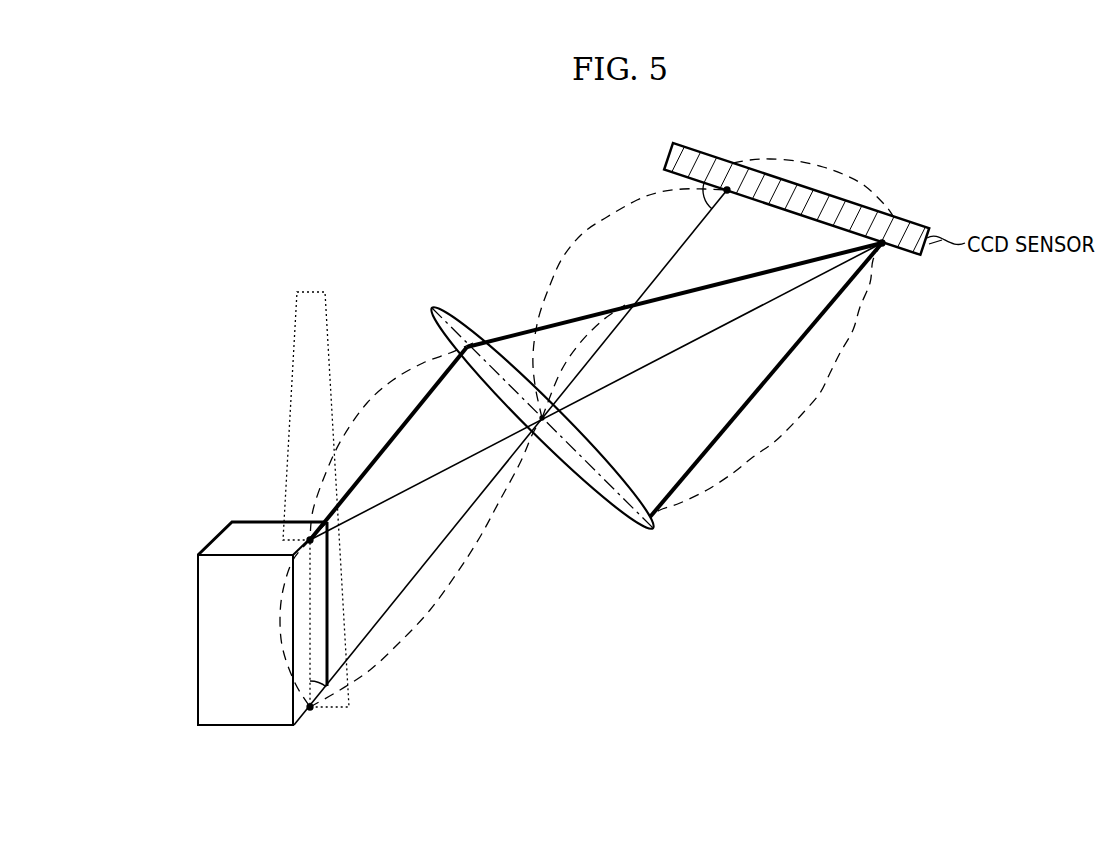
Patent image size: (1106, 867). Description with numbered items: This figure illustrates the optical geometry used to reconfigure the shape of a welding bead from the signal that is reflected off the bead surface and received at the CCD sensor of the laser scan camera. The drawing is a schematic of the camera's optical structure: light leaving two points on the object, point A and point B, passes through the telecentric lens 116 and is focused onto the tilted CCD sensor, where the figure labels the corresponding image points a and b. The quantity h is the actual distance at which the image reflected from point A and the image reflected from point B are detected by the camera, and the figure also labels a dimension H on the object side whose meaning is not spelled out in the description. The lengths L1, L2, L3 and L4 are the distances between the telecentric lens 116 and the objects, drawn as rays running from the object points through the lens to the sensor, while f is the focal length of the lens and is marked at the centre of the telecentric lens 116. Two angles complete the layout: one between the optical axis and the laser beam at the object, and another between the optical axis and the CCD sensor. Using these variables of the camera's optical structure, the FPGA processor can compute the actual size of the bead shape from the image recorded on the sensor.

The telecentric lens 116 is at (646, 527).
The point A is at (311, 709).
The point B is at (309, 539).
The image point a on CCD sensor a is at (738, 164).
The image point b on CCD sensor b is at (901, 221).
The focal length of a lens f is at (554, 379).
The object height H is at (286, 623).
The actual distance h is at (837, 191).
The distance between the telecentric lens and objects L1 is at (426, 562).
The distance between the telecentric lens and objects L2 is at (674, 303).
The distance between the telecentric lens and objects L3 is at (391, 441).
The distance between the telecentric lens and objects L4 is at (766, 380).